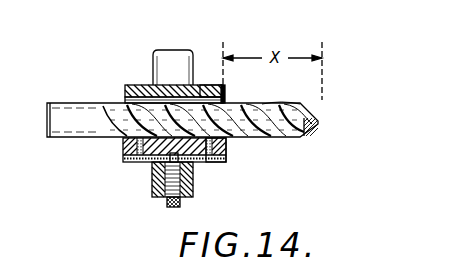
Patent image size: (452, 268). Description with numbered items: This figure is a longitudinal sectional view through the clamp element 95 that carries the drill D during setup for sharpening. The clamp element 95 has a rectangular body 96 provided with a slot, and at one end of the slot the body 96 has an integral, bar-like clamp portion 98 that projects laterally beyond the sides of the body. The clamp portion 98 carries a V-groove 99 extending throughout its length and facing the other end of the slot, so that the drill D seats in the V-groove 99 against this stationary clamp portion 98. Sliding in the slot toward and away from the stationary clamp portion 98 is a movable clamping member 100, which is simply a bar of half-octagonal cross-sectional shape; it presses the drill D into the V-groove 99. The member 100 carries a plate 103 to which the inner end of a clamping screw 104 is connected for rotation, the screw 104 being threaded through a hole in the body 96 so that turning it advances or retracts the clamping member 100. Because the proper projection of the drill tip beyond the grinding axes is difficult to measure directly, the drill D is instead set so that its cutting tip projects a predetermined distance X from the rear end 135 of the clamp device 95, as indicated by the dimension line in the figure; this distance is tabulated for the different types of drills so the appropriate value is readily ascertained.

The drill D is at (69, 103).
The clamp element 95 is at (132, 83).
The rectangular body 96 is at (188, 50).
The clamp portion 98 is at (208, 89).
The V-groove 99 is at (163, 100).
The movable clamping member 100 is at (227, 150).
The plate 103 is at (145, 163).
The clamping screw 104 is at (182, 205).
The rear end 135 is at (226, 92).